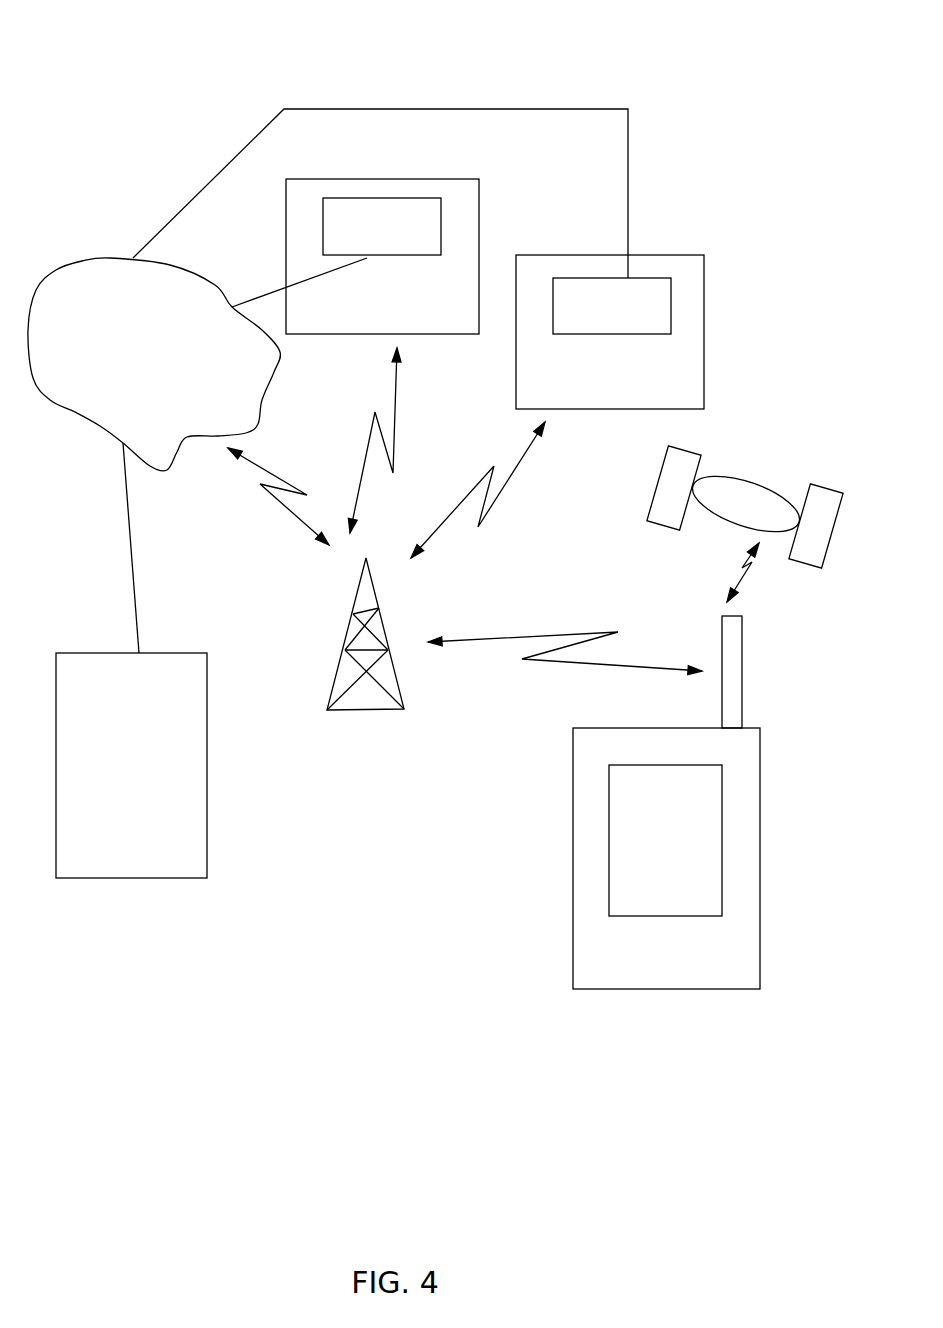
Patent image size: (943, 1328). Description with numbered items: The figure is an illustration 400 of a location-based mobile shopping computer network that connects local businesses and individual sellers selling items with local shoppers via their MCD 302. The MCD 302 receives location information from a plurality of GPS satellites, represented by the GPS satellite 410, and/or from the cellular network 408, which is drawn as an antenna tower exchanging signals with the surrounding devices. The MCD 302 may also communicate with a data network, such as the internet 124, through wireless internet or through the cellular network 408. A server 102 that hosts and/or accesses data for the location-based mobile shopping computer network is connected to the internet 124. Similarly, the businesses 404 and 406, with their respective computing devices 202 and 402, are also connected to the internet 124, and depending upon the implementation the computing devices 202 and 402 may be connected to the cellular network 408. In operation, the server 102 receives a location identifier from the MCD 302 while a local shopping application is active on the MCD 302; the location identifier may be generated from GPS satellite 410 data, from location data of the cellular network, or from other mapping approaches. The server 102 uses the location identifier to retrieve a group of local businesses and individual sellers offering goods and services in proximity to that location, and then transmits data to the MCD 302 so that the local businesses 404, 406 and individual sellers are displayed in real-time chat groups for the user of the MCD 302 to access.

The illustration 400 is at (675, 47).
The internet 124 is at (154, 364).
The server 102 is at (131, 660).
The business 404 is at (382, 256).
The computing device 202 is at (336, 252).
The business 406 is at (610, 332).
The computing device 402 is at (612, 306).
The cellular network 408 is at (347, 693).
The GPS satellite 410 is at (745, 507).
The MCD 302 is at (666, 802).